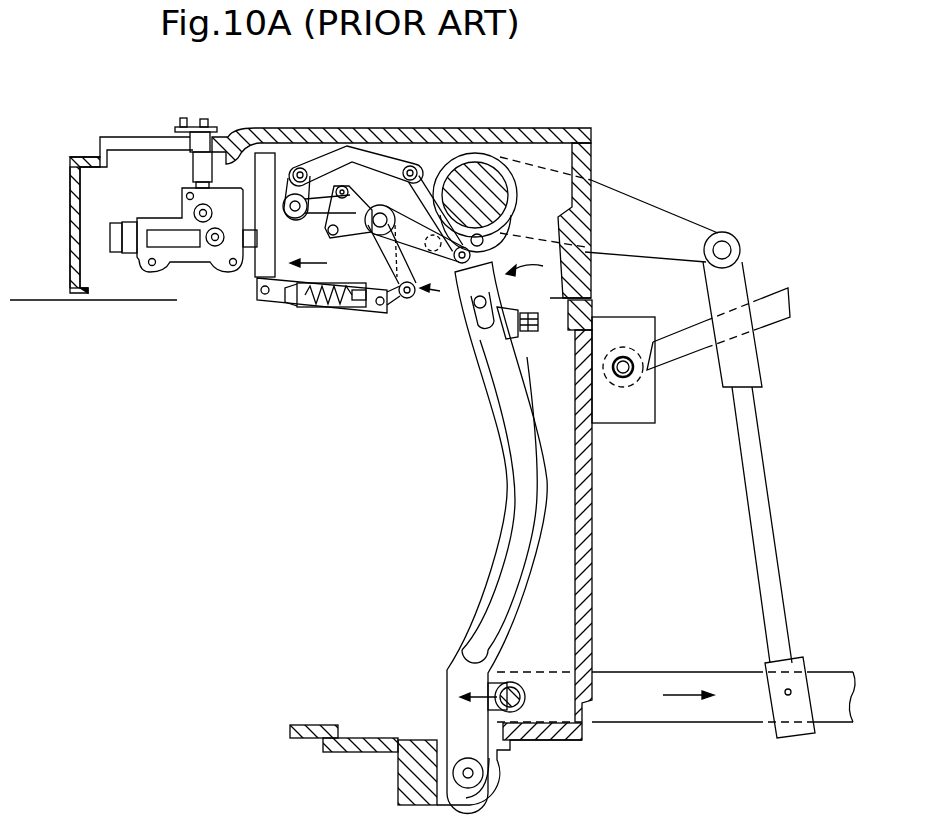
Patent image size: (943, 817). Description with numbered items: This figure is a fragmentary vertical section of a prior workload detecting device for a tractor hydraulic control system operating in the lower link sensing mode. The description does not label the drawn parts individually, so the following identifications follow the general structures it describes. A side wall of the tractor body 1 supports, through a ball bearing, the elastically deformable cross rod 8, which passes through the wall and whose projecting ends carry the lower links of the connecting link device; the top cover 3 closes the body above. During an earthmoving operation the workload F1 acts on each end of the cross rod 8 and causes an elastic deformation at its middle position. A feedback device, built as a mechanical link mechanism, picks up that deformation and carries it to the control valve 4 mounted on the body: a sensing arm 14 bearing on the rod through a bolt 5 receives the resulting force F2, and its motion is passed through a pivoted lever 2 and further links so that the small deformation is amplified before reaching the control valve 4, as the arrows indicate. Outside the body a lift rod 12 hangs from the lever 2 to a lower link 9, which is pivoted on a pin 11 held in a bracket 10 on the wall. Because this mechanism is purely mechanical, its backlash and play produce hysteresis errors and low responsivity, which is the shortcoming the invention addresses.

The housing 1 is at (613, 538).
The lever 2 is at (663, 217).
The housing cover 3 is at (536, 131).
The hydraulic valve unit 4 is at (197, 253).
The bolt 5 is at (513, 680).
The bar 8 is at (737, 675).
The bar 9 is at (773, 308).
The box 10 is at (627, 404).
The pivot pin 11 is at (623, 367).
The rod 12 is at (758, 482).
The arm 14 is at (472, 450).
The workload F1 is at (685, 695).
The force F2 is at (480, 693).